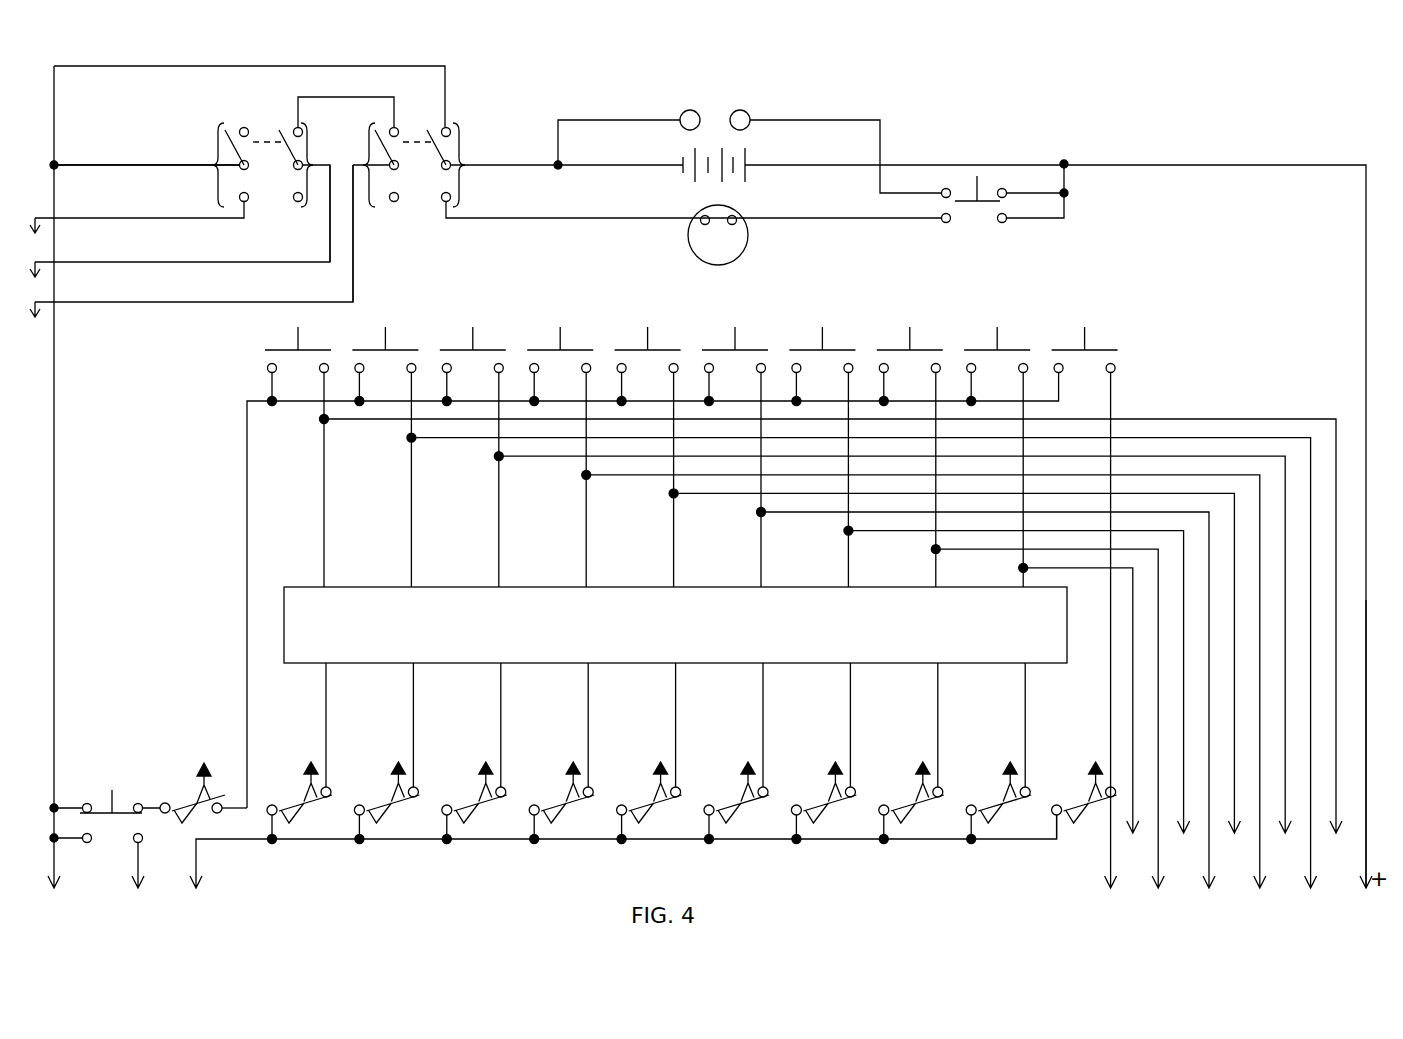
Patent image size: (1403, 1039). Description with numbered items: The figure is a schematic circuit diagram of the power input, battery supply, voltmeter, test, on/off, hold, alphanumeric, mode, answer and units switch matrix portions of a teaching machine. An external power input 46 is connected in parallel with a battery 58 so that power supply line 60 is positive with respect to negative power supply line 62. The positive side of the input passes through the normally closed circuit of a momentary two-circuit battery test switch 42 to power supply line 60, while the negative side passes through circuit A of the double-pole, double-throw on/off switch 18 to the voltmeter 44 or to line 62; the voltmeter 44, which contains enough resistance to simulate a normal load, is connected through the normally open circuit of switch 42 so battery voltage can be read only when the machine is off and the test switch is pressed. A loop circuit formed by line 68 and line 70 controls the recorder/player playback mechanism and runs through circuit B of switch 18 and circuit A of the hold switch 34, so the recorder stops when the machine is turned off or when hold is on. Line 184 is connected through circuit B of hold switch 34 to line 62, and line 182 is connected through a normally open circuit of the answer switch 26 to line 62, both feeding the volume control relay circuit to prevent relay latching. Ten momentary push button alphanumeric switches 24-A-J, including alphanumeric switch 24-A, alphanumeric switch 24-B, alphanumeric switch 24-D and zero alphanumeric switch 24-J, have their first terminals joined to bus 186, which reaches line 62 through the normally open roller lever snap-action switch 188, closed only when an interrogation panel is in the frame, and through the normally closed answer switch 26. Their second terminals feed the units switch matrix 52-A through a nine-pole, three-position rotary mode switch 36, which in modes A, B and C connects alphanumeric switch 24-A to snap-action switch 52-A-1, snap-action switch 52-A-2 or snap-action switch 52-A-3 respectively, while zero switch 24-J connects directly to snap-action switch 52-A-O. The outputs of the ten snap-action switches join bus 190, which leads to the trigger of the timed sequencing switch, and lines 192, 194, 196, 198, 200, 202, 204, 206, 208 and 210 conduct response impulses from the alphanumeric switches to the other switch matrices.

The line 184 is at (145, 165).
The hold switch 34 is at (263, 122).
The double-pole, double-throw switch 18 is at (418, 118).
The external power input 46 is at (718, 90).
The battery 58 is at (746, 178).
The battery test switch 42 is at (978, 177).
The voltmeter 44 is at (689, 251).
The line 70 is at (96, 262).
The line 68 is at (96, 302).
The alphanumeric switch 24-A is at (298, 338).
The alphanumeric switch 24-B is at (388, 340).
The alphanumeric switch 24-D is at (562, 340).
The zero alphanumeric switch 24-J is at (1083, 340).
The alphanumeric switches 24-A-J is at (756, 298).
The bus 186 is at (247, 412).
The rotary mode switch 36 is at (653, 587).
The roller lever snap-action switch 188 is at (200, 798).
The answer switch 26 is at (112, 796).
The power supply line 62 is at (56, 878).
The line 182 is at (107, 876).
The bus 190 is at (724, 840).
The snap-action switch 52-A-1 is at (287, 812).
The snap-action switch 52-A-2 is at (374, 812).
The snap-action switch 52-A-3 is at (548, 812).
The units switch matrix 52-A is at (840, 854).
The snap-action switch 52-A-O is at (1078, 816).
The line 192 is at (1110, 646).
The line 194 is at (1086, 715).
The line 196 is at (1056, 732).
The line 198 is at (1024, 696).
The line 200 is at (994, 713).
The line 202 is at (962, 678).
The line 204 is at (932, 694).
The line 206 is at (900, 660).
The line 208 is at (870, 675).
The line 210 is at (838, 641).
The power supply line 60 is at (1362, 759).